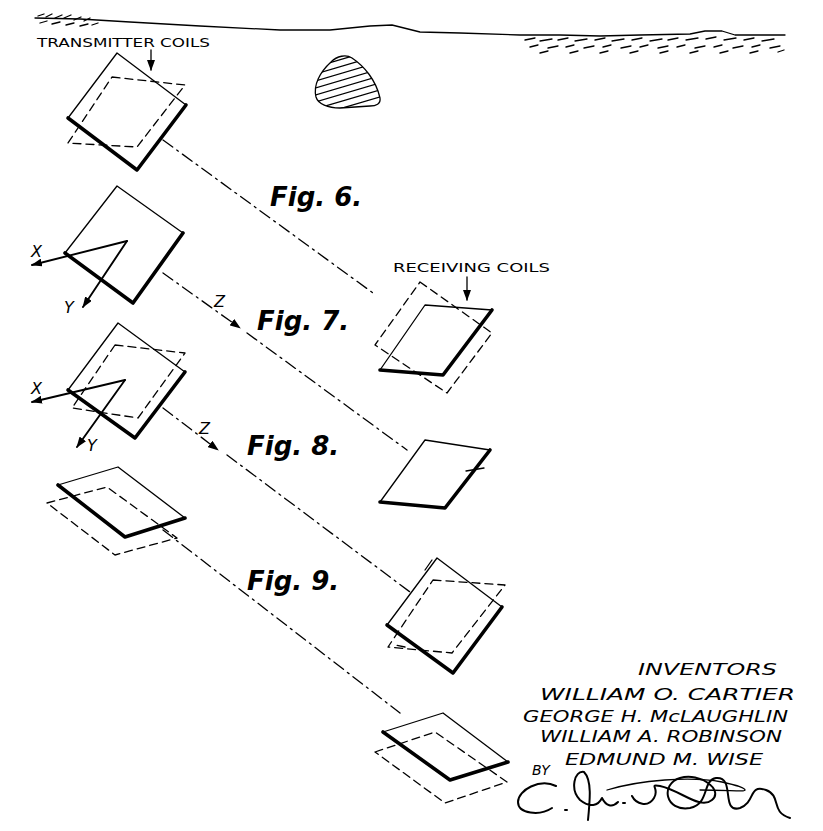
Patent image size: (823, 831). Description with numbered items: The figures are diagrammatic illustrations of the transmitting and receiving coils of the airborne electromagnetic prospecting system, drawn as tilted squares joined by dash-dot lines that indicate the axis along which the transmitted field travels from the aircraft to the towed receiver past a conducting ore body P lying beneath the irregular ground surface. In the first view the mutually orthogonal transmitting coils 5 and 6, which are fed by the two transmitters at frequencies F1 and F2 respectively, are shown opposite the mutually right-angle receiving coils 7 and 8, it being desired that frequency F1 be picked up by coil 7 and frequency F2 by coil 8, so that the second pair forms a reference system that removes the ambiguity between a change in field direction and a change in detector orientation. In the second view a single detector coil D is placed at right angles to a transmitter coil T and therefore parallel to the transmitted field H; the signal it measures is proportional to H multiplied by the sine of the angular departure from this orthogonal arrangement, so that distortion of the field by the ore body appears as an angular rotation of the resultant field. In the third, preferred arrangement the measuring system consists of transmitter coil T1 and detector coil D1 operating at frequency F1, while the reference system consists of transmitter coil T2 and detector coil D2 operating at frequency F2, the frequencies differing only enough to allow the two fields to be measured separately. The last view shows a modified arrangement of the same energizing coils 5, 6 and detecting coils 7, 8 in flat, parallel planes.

In FIG. 6, the transmitting coil 5 is at (110, 61).
In FIG. 7, the transmitting coil 5 is at (107, 195).
In FIG. 8, the transmitting coil 5 is at (107, 337).
In FIG. 9, the transmitting coil 5 is at (100, 468).
In FIG. 6, the transmitting coil 6 is at (72, 138).
In FIG. 8, the transmitting coil 6 is at (163, 354).
In FIG. 9, the transmitting coil 6 is at (63, 516).
In FIG. 6, the receiving coil 7 is at (398, 372).
In FIG. 7, the receiving coil 7 is at (484, 468).
In FIG. 8, the receiving coil 7 is at (432, 560).
In FIG. 9, the receiving coil 7 is at (443, 713).
In FIG. 6, the receiving coil 8 is at (420, 282).
In FIG. 8, the receiving coil 8 is at (405, 647).
In FIG. 9, the receiving coil 8 is at (375, 752).
In FIG. 6, the conducting body (ore body) P is at (362, 70).
In FIG. 7, the transmitter coil T is at (194, 236).
In FIG. 8, the transmitter coil T1 is at (187, 372).
In FIG. 8, the transmitter coil T2 is at (175, 392).
In FIG. 7, the detector coil D is at (425, 440).
In FIG. 8, the detector coil D1 is at (437, 558).
In FIG. 8, the detector coil D2 is at (505, 585).